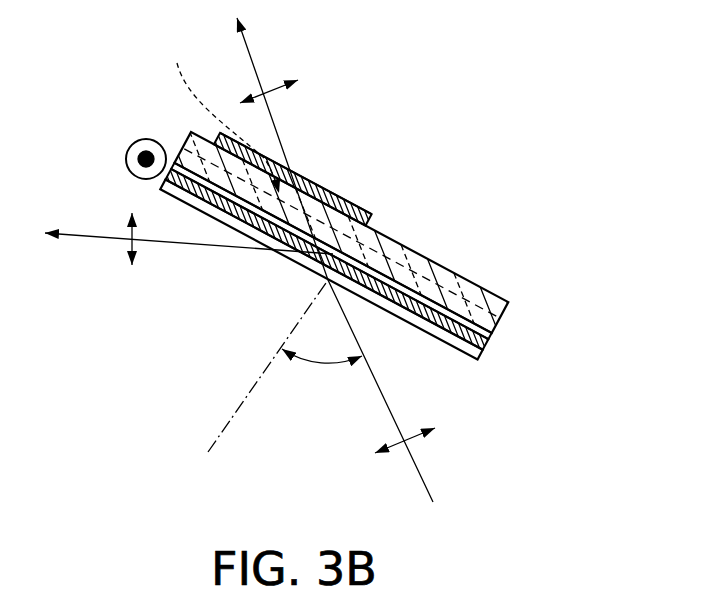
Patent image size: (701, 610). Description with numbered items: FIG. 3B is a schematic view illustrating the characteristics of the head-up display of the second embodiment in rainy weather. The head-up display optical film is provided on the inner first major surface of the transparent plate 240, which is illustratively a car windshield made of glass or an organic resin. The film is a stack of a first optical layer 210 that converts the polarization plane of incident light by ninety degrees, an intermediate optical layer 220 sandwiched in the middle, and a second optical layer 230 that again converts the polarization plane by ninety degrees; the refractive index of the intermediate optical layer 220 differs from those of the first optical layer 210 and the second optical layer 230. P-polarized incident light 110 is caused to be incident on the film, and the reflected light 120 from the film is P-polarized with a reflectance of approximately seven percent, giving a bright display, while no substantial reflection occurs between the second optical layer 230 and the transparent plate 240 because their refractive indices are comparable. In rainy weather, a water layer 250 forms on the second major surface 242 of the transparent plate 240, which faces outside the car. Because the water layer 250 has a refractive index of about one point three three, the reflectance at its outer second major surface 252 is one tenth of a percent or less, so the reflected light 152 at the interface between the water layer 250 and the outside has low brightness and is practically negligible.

The P-polarized incident light 110 is at (428, 485).
The reflected light 120 is at (100, 237).
The reflected light at the interface between the water layer and the outside 152 is at (209, 113).
The first optical layer 210 is at (455, 352).
The intermediate optical layer 220 is at (486, 344).
The second optical layer 230 is at (490, 334).
The transparent plate 240 is at (466, 290).
The second major surface of the transparent plate 242 is at (410, 244).
The water layer 250 is at (358, 215).
The second major surface of the water layer 252 is at (327, 182).